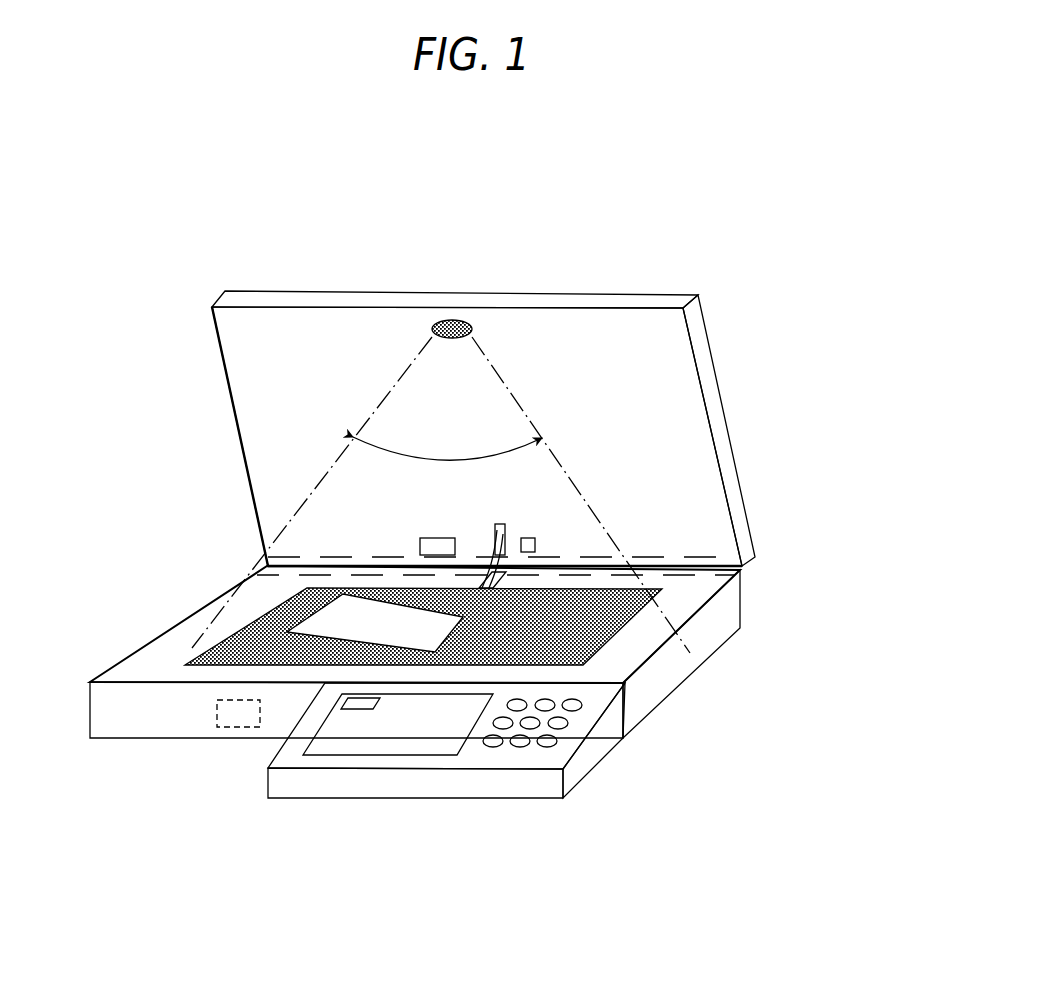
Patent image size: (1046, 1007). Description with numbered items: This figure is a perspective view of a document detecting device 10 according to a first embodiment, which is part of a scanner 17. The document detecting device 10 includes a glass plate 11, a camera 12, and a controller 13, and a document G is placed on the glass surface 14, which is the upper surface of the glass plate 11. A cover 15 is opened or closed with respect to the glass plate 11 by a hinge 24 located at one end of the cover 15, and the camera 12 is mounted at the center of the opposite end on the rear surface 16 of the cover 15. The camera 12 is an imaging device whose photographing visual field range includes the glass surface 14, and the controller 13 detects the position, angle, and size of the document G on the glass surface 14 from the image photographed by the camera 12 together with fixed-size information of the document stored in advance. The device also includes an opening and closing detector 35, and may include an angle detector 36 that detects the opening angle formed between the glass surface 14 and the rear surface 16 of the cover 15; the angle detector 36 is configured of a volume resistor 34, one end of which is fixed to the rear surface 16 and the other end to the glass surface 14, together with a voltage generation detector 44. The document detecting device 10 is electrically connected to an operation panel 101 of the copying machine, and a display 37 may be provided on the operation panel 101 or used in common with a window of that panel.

The document detecting device 10 is at (712, 198).
The glass plate 11 is at (574, 657).
The camera 12 is at (460, 320).
The controller 13 is at (220, 713).
The glass surface 14 is at (607, 643).
The cover 15 is at (280, 289).
The rear surface 16 is at (262, 340).
The scanner 17 is at (746, 633).
The hinge 24 is at (700, 557).
The volume resistor 34 is at (508, 537).
The opening and closing detector 35 is at (438, 538).
The angle detector 36 is at (504, 524).
The display 37 is at (358, 703).
The voltage generation detector 44 is at (536, 545).
The operation panel 101 is at (267, 762).
The document G is at (330, 605).